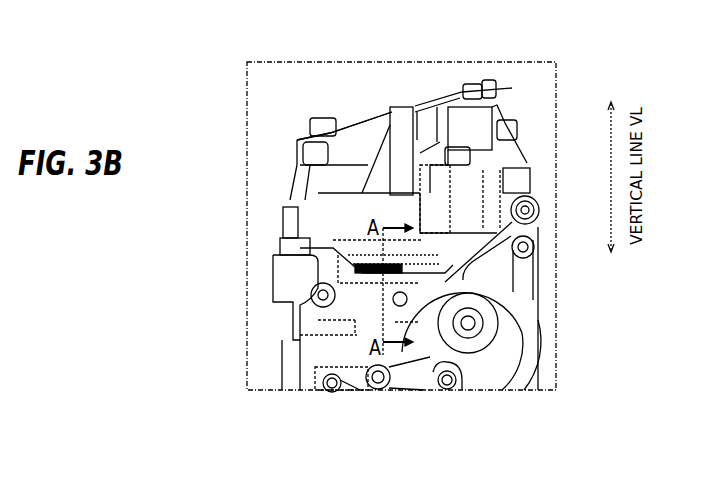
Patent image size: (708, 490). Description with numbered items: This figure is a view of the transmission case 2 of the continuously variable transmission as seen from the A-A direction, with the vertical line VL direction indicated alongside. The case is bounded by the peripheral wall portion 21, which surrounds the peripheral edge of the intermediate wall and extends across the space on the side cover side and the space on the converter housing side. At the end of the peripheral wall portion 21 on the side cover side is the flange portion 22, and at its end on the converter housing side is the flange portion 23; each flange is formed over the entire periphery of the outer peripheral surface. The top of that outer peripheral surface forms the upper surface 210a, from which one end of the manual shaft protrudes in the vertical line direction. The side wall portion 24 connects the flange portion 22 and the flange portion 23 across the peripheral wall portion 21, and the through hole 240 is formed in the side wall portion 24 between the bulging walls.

The transmission case 2 is at (511, 83).
The peripheral wall portion 21 is at (440, 94).
The flange portion 22 is at (517, 152).
The flange portion 23 is at (297, 152).
The side wall portion 24 is at (418, 262).
The upper surface 210a is at (362, 140).
The through hole 240 is at (384, 306).